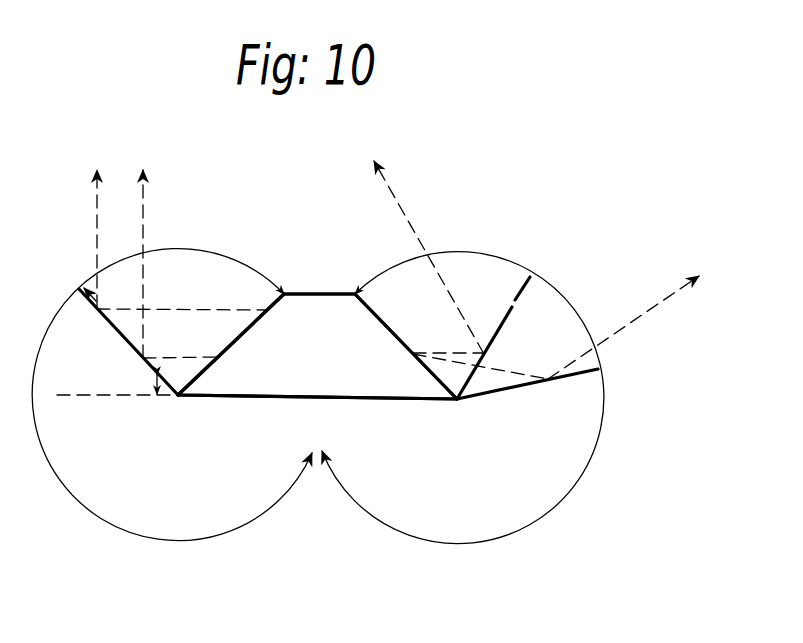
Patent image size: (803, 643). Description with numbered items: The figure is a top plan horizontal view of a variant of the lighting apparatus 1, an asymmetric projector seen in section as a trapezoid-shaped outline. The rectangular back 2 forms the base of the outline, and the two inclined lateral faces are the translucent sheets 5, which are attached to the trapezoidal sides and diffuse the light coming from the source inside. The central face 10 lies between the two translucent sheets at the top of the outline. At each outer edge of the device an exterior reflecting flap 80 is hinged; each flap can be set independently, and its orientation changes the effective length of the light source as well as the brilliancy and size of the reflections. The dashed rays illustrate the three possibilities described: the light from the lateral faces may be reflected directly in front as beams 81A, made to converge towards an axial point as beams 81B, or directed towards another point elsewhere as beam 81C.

The lighting apparatus 1 is at (243, 411).
The rectangular back 2 is at (321, 397).
The translucent sheets 5 is at (245, 328).
The central face 10 is at (329, 292).
The exterior reflecting flaps 80 is at (114, 328).
The light beams reflected directly in front 81A is at (182, 253).
The converging light beams 81B is at (429, 255).
The light beam directed elsewhere 81C is at (556, 315).